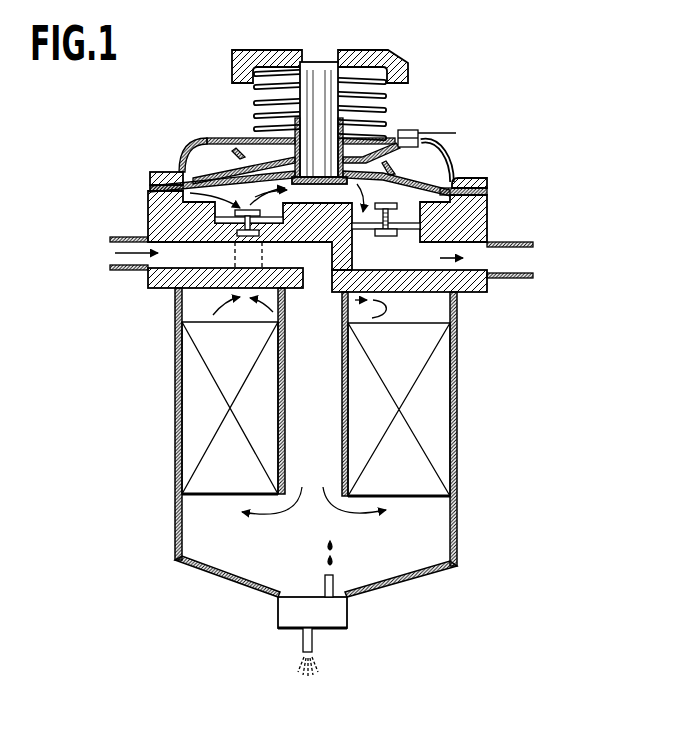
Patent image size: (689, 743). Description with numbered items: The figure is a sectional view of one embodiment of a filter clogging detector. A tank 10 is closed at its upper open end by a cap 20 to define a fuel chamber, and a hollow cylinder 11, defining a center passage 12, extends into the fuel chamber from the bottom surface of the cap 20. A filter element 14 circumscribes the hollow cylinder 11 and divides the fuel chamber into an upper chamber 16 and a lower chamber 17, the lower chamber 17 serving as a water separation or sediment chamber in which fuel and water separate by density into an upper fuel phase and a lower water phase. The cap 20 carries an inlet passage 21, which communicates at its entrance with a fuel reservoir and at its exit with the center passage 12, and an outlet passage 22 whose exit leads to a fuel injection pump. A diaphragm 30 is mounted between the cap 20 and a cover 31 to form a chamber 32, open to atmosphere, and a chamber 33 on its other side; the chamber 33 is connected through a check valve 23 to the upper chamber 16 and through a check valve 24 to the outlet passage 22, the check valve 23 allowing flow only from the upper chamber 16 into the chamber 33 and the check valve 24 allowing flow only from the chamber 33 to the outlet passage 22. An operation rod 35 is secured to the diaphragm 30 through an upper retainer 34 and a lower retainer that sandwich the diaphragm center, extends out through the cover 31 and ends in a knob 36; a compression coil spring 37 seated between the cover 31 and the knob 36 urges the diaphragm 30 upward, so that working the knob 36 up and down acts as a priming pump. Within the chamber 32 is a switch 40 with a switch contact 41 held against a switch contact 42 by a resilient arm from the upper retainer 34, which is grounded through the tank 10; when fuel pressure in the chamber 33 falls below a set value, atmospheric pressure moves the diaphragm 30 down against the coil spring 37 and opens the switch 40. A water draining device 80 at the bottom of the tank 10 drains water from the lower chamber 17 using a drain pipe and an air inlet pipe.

The tank 10 is at (458, 548).
The hollow cylinder 11 is at (343, 383).
The center passage 12 is at (305, 432).
The filter element 14 is at (435, 408).
The upper chamber 16 is at (193, 310).
The lower chamber 17 is at (372, 565).
The cap 20 is at (502, 228).
The inlet passage 21 is at (140, 270).
The outlet passage 22 is at (478, 255).
The check valve 23 is at (148, 188).
The check valve 24 is at (390, 237).
The diaphragm 30 is at (225, 185).
The cover 31 is at (490, 173).
The chamber 32 is at (263, 148).
The chamber 33 is at (220, 197).
The upper retainer 34 is at (405, 168).
The operation rod 35 is at (315, 80).
The knob 36 is at (362, 50).
The compression coil spring 37 is at (263, 103).
The switch 40 is at (422, 100).
The switch contact 41 is at (414, 165).
The switch contact 42 is at (403, 130).
The water draining device 80 is at (336, 636).